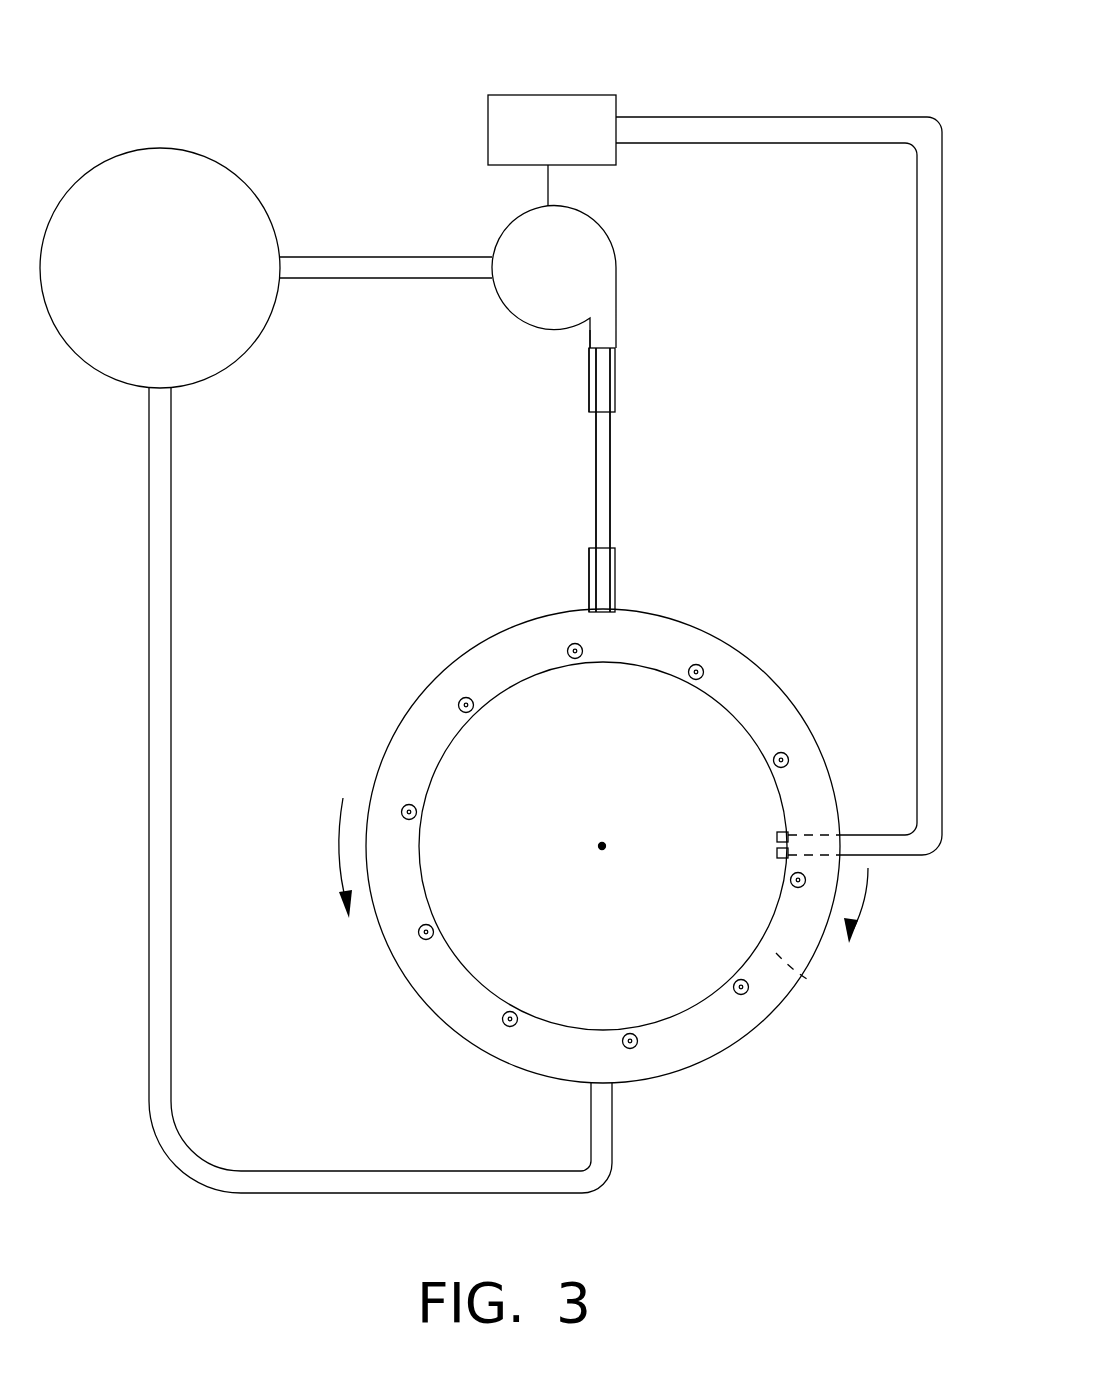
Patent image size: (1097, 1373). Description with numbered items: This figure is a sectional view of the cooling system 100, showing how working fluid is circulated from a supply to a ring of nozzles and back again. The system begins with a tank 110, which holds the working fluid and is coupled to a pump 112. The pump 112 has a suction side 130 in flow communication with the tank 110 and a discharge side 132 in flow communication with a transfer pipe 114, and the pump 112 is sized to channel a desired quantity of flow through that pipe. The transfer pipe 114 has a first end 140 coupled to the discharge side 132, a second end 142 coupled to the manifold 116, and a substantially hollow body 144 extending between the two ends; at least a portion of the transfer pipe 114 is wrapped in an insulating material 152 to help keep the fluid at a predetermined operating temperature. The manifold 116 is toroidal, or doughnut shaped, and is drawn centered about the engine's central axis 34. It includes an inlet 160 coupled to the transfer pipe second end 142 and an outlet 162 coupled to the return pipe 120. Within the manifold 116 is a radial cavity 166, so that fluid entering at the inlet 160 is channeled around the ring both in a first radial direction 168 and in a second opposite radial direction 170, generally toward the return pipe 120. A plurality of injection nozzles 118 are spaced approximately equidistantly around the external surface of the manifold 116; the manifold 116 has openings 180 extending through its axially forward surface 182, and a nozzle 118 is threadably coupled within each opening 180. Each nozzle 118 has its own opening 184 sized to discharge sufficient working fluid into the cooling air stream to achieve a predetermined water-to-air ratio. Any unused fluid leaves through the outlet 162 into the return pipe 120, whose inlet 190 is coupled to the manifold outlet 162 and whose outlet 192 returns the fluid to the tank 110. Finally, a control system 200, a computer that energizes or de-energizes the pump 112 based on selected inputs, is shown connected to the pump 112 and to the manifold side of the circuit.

The cooling system 100 is at (822, 32).
The tank 110 is at (186, 296).
The pump 112 is at (579, 286).
The control system 200 is at (591, 139).
The suction side 130 is at (492, 255).
The discharge side 132 is at (590, 338).
The first end 140 is at (616, 358).
The second end 142 is at (606, 604).
The insulating material 152 is at (590, 380).
The transfer pipe 114 is at (596, 452).
The hollow body 144 is at (606, 478).
The inlet 160 is at (596, 602).
The outlet 162 is at (612, 1088).
The manifold 116 is at (788, 690).
The central axis 34 is at (602, 842).
The injection nozzles 118 is at (460, 700).
The openings 180 is at (568, 650).
The axially forward surface 182 is at (404, 930).
The opening 184 is at (698, 665).
The radial cavity 166 is at (800, 978).
The first radial direction 168 is at (338, 848).
The second opposite radial direction 170 is at (866, 885).
The inlet 190 is at (591, 1088).
The outlet 192 is at (149, 390).
The return pipe 120 is at (405, 1196).